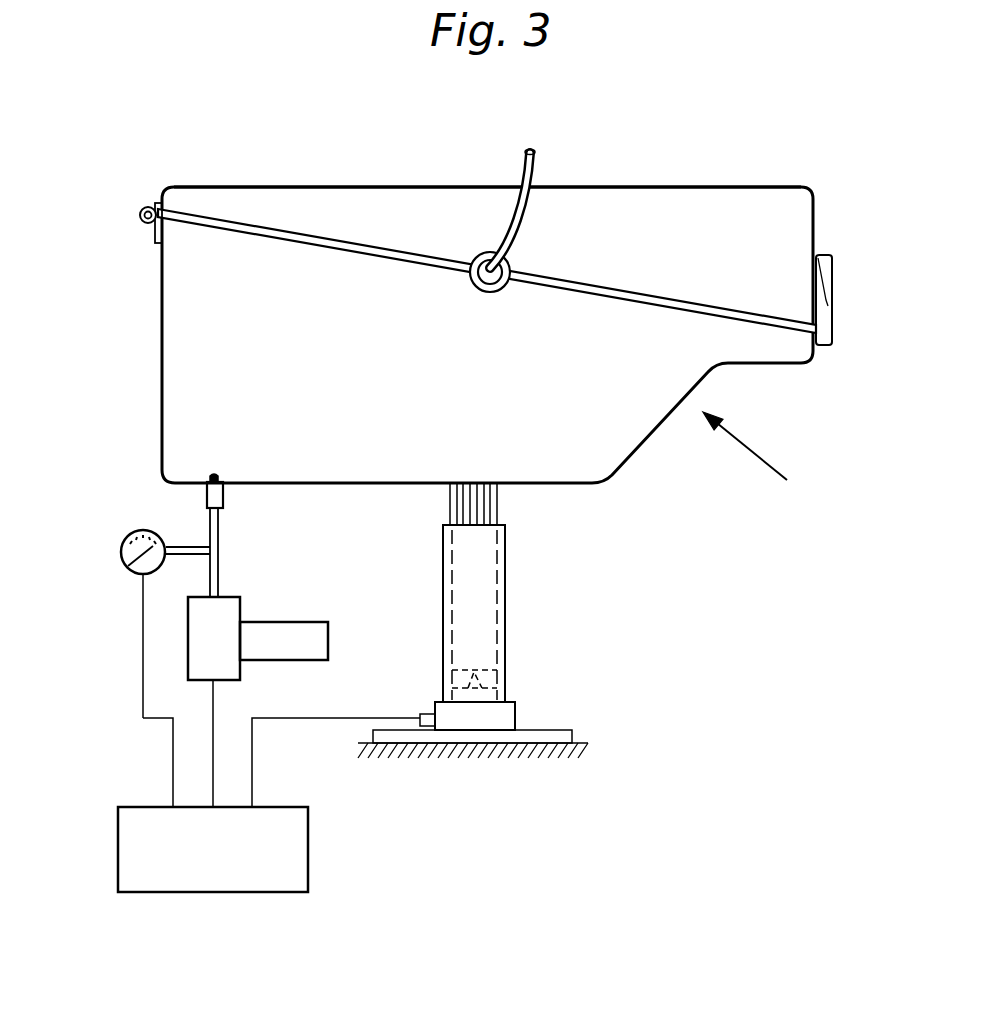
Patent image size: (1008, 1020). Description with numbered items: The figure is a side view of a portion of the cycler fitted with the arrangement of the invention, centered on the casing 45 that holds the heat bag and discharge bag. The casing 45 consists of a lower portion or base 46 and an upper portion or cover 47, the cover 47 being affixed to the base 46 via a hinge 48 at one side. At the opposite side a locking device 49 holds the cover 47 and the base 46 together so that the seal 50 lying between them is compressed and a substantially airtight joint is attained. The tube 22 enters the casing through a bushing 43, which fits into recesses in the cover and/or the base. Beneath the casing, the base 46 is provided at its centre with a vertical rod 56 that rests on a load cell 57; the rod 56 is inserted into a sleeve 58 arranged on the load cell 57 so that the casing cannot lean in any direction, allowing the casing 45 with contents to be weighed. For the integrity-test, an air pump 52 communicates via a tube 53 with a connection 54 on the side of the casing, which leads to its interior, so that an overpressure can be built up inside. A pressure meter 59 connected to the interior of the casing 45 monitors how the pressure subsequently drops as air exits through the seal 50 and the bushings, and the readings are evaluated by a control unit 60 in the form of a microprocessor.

The tube 22 is at (535, 180).
The bushing 43 is at (483, 252).
The casing 45 is at (771, 462).
The base 46 is at (162, 332).
The cover 47 is at (360, 187).
The hinge 48 is at (140, 217).
The locking device 49 is at (832, 256).
The seal 50 is at (200, 222).
The air pump 52 is at (222, 610).
The tube 53 is at (207, 518).
The connection 54 is at (203, 492).
The vertical rod 56 is at (496, 508).
The load cell 57 is at (500, 700).
The sleeve 58 is at (505, 612).
The pressure meter 59 is at (125, 540).
The control unit 60 is at (287, 847).